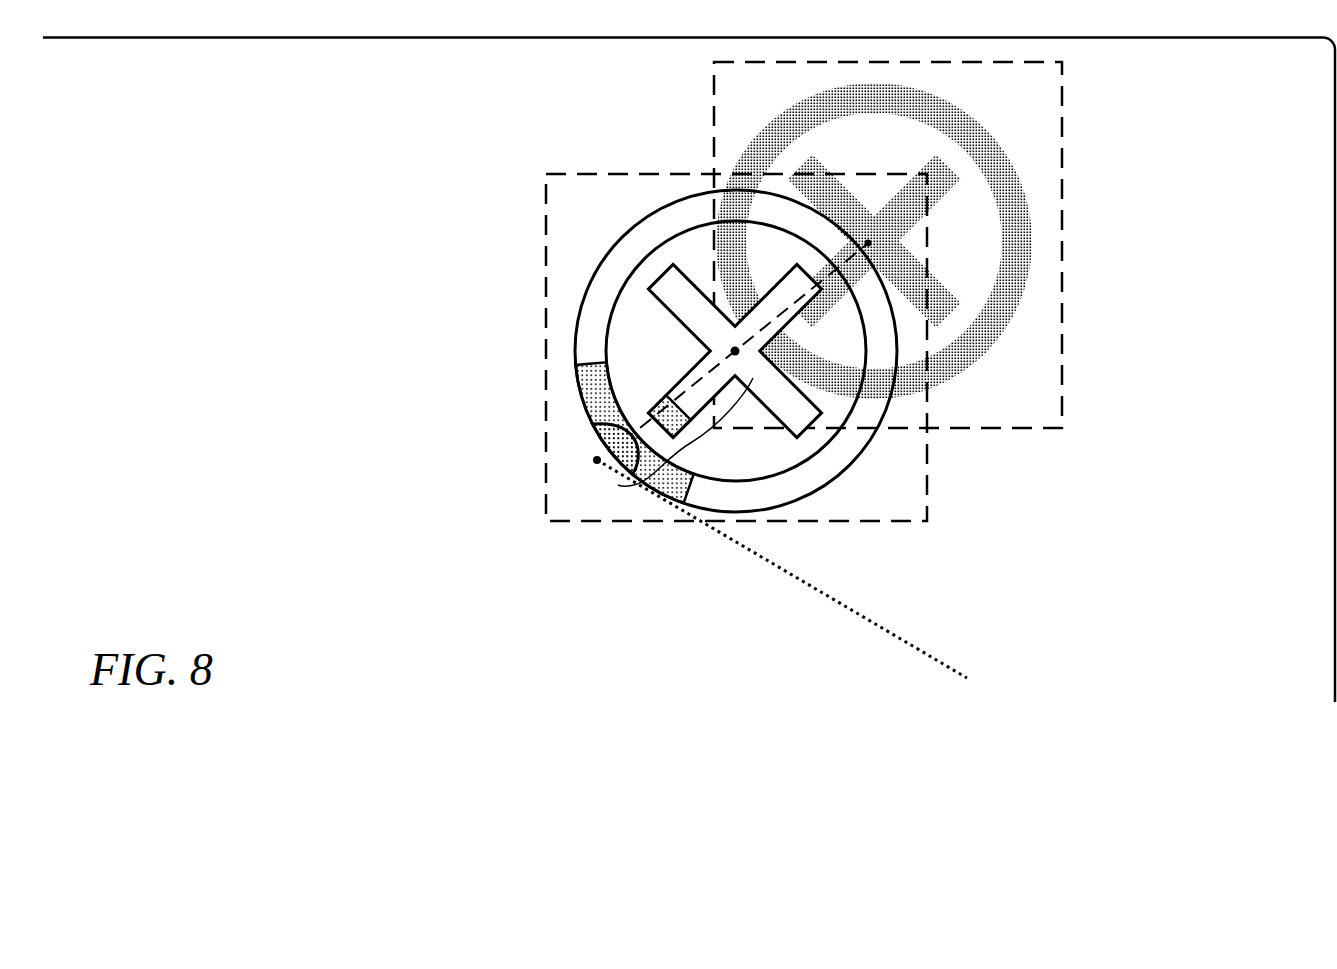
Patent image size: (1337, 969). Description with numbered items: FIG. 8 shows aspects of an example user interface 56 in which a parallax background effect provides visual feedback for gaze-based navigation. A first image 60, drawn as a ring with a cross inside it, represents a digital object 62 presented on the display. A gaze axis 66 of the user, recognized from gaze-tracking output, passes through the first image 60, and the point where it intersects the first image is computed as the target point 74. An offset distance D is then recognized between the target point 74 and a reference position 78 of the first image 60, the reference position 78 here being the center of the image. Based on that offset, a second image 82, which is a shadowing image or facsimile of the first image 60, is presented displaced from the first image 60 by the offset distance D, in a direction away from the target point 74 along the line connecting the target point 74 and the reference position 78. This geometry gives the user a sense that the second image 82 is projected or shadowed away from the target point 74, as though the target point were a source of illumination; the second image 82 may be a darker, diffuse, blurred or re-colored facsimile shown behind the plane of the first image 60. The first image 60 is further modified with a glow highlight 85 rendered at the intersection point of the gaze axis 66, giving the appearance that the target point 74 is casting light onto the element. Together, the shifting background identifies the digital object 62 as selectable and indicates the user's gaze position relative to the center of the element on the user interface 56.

The user interface 56 is at (195, 158).
The first image 60 is at (927, 480).
The digital object 62 is at (504, 186).
The gaze axis 66 is at (837, 602).
The target point 74 is at (597, 460).
The reference position 78 is at (733, 351).
The second image 82 is at (713, 117).
The glow highlight 85 is at (572, 402).
The offset distance D is at (685, 432).